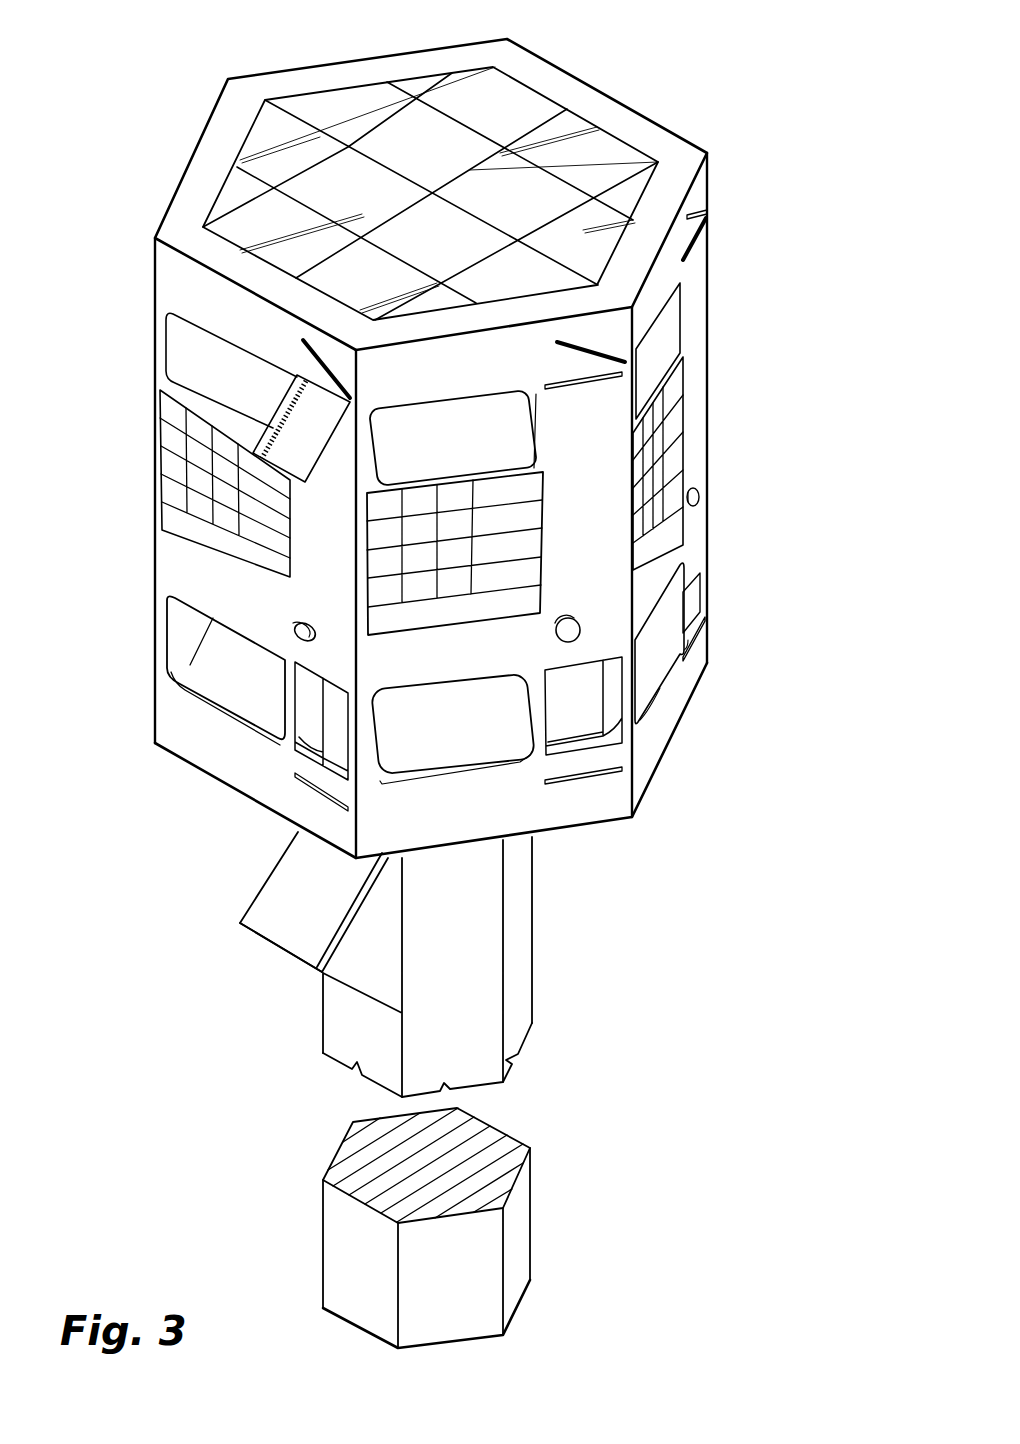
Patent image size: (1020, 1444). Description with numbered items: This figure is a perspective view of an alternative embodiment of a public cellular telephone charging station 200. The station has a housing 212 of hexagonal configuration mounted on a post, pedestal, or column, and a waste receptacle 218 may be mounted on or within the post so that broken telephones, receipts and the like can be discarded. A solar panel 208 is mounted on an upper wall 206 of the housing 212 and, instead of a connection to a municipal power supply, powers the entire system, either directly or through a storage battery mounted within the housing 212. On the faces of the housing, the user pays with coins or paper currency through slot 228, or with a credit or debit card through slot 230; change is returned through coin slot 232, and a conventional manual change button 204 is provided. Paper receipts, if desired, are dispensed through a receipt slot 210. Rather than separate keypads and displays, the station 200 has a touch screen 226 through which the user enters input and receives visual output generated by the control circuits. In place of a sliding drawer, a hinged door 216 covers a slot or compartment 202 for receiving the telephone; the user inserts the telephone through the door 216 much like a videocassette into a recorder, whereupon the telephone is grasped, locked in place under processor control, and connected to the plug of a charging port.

The charging station 200 is at (438, 684).
The slot or compartment 202 is at (235, 558).
The manual change button 204 is at (308, 620).
The upper wall 206 is at (655, 130).
The solar panel 208 is at (345, 103).
The receipt slot 210 is at (307, 780).
The housing 212 is at (707, 433).
The door 216 is at (261, 688).
The waste receptacle 218 is at (273, 947).
The touch screen 226 is at (160, 508).
The slot for coins or paper currency 228 is at (345, 335).
The card slot 230 is at (297, 373).
The coin slot 232 is at (325, 762).